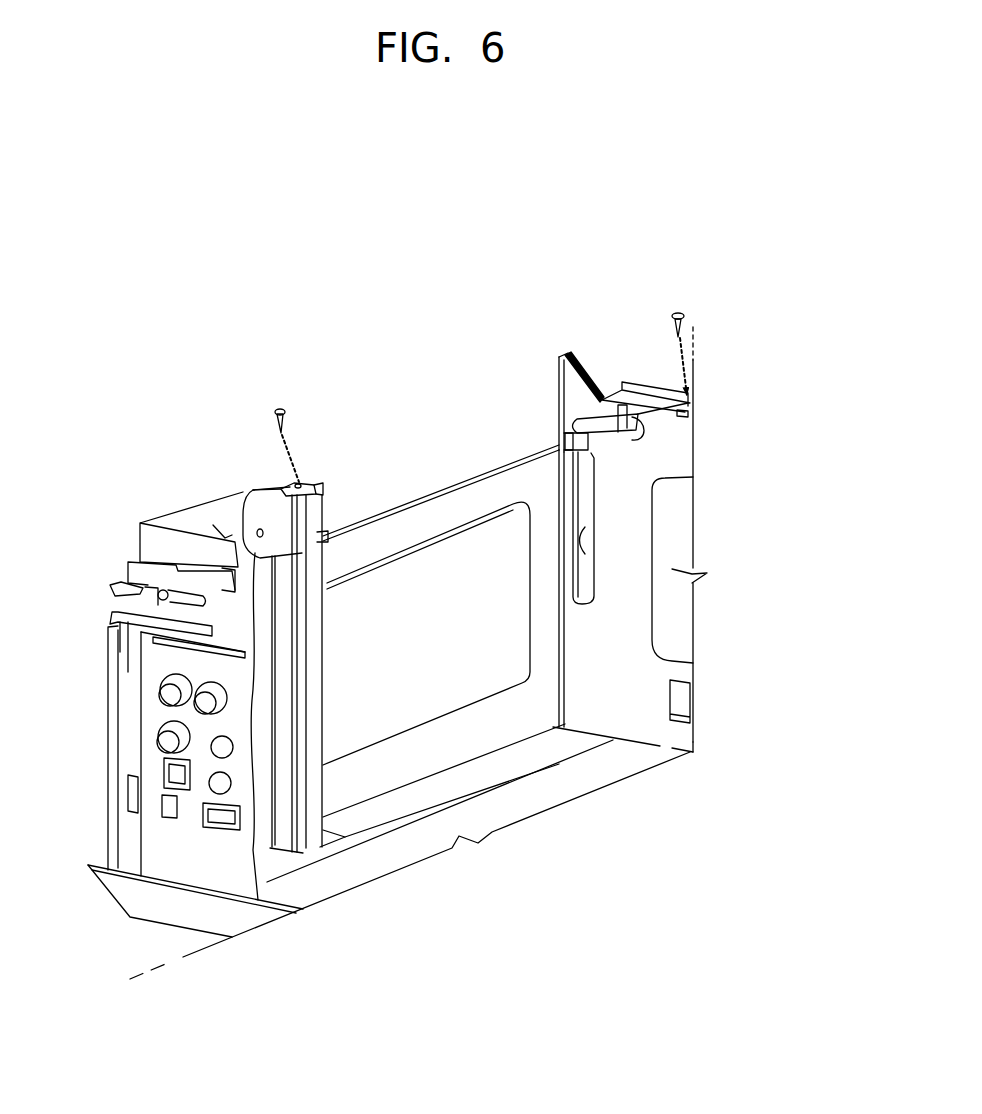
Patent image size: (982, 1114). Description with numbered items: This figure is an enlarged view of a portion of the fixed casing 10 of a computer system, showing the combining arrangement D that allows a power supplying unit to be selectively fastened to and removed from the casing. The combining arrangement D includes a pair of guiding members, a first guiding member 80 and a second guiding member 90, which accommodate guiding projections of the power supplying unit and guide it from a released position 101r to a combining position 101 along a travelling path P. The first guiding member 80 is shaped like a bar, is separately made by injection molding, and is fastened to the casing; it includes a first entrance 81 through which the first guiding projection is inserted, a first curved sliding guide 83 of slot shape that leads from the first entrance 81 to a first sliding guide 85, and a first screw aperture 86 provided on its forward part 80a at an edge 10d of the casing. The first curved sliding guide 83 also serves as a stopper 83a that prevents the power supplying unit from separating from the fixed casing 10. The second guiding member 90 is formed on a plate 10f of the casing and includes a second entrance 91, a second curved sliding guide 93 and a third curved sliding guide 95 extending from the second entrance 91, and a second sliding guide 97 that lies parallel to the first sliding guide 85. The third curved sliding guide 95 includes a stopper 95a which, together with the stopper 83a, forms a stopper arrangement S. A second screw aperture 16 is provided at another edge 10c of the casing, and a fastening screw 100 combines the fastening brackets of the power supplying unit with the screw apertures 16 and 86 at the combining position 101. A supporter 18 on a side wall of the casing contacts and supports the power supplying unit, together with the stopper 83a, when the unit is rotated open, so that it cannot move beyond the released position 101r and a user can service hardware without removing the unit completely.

The fixed casing 10 is at (695, 665).
The edge of the fixed casing 10c is at (698, 408).
The edge of the fixed casing 10d is at (307, 477).
The plate of the fixed casing 10f is at (683, 740).
The second screw aperture 16 is at (687, 398).
The supporter 18 is at (443, 488).
The first guiding member 80 is at (63, 558).
The forward part of the first guiding member 80a is at (273, 486).
The first entrance 81 is at (262, 558).
The first curved sliding guide 83 is at (212, 524).
The stopper 83a is at (320, 546).
The first sliding guide 85 is at (126, 566).
The first screw aperture 86 is at (297, 480).
The second guiding member 90 is at (751, 545).
The second entrance 91 is at (637, 431).
The second curved sliding guide 93 is at (600, 446).
The third curved sliding guide 95 is at (593, 458).
The stopper 95a is at (563, 424).
The second sliding guide 97 is at (588, 553).
The fastening screw 100 is at (279, 409).
The combining position 101 is at (298, 712).
The released position 101r is at (327, 546).
The combining arrangement D is at (410, 258).
The travelling path P is at (310, 632).
The stopper arrangement S is at (331, 488).